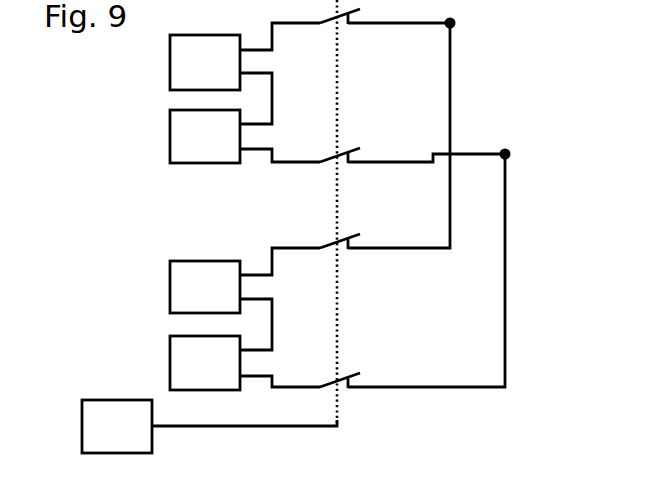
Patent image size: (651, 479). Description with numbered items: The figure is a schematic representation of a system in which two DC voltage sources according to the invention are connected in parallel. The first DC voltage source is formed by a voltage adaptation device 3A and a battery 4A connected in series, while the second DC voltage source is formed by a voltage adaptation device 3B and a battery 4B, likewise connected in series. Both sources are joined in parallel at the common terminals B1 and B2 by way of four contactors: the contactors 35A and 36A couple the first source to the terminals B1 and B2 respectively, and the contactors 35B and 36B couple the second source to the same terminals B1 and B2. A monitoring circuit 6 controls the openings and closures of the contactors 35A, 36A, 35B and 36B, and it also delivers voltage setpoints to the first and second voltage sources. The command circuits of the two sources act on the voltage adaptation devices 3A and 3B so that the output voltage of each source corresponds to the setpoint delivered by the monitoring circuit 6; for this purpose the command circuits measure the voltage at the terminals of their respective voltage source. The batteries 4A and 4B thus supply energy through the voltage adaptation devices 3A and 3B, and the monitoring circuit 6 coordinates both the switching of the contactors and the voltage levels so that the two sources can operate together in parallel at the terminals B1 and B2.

The voltage adaptation device 3A is at (205, 62).
The battery 4A is at (205, 136).
The voltage adaptation device 3B is at (205, 287).
The battery 4B is at (205, 363).
The monitoring circuit 6 is at (117, 426).
The contactor 35A is at (354, 29).
The contactor 36A is at (354, 168).
The contactor 35B is at (354, 254).
The contactor 36B is at (354, 393).
The terminal B1 is at (467, 25).
The terminal B2 is at (524, 157).